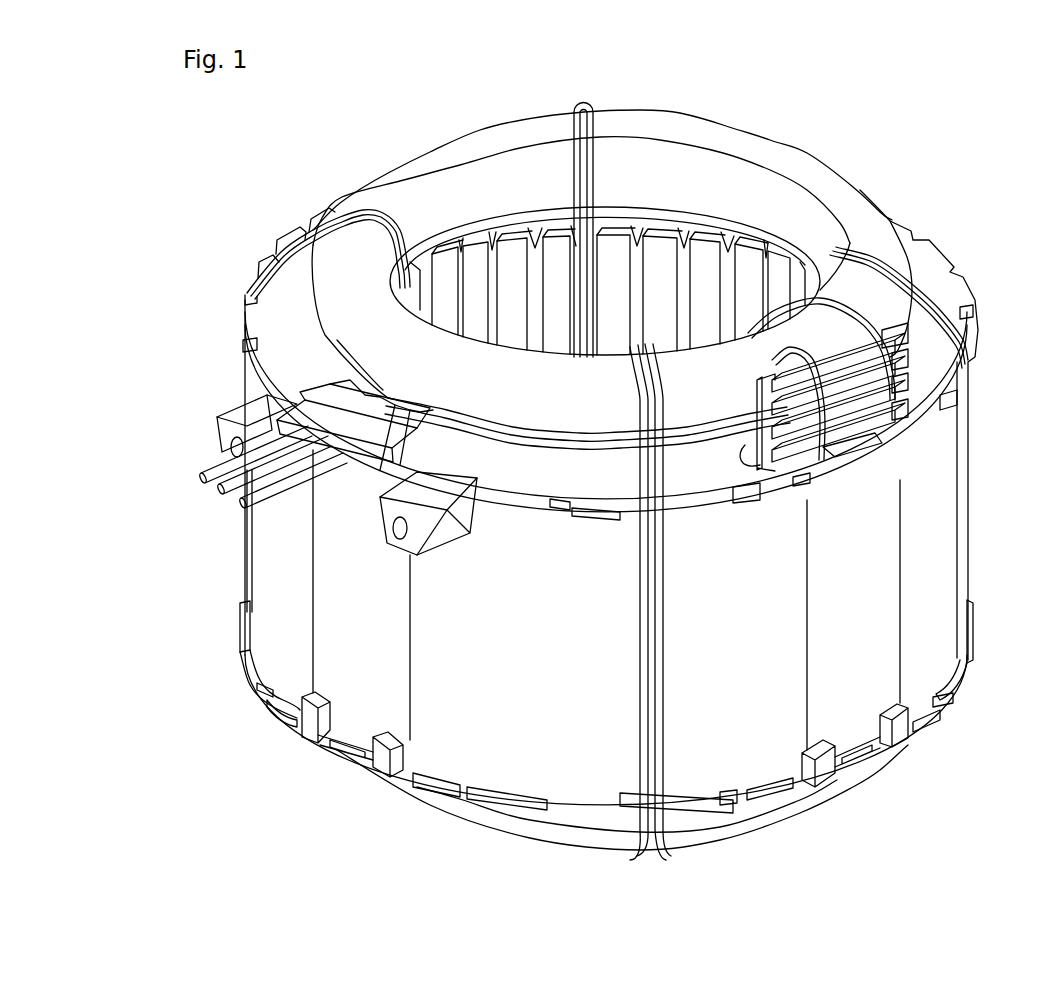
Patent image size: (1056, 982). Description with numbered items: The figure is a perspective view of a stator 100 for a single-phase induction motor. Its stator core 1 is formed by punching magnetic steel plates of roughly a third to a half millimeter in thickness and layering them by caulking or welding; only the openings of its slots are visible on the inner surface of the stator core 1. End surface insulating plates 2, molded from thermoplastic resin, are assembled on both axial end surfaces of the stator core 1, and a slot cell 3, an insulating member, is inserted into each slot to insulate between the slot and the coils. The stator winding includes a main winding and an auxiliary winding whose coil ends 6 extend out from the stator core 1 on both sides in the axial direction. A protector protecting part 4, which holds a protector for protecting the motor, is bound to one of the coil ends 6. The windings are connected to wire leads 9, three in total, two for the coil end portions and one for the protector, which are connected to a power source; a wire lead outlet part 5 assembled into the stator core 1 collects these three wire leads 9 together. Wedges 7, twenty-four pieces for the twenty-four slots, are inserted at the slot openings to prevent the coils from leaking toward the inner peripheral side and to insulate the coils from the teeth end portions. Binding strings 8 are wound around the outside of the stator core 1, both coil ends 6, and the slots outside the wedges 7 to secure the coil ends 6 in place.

The stator 100 is at (873, 120).
The stator core 1 is at (947, 560).
The end surface insulating plates 2 is at (958, 290).
The slot cell 3 is at (560, 210).
The protector protecting part 4 is at (905, 400).
The wire lead outlet part 5 is at (250, 410).
The coil ends 6 is at (768, 143).
The wedges 7 is at (640, 207).
The binding strings 8 is at (640, 777).
The wire leads 9 is at (223, 490).